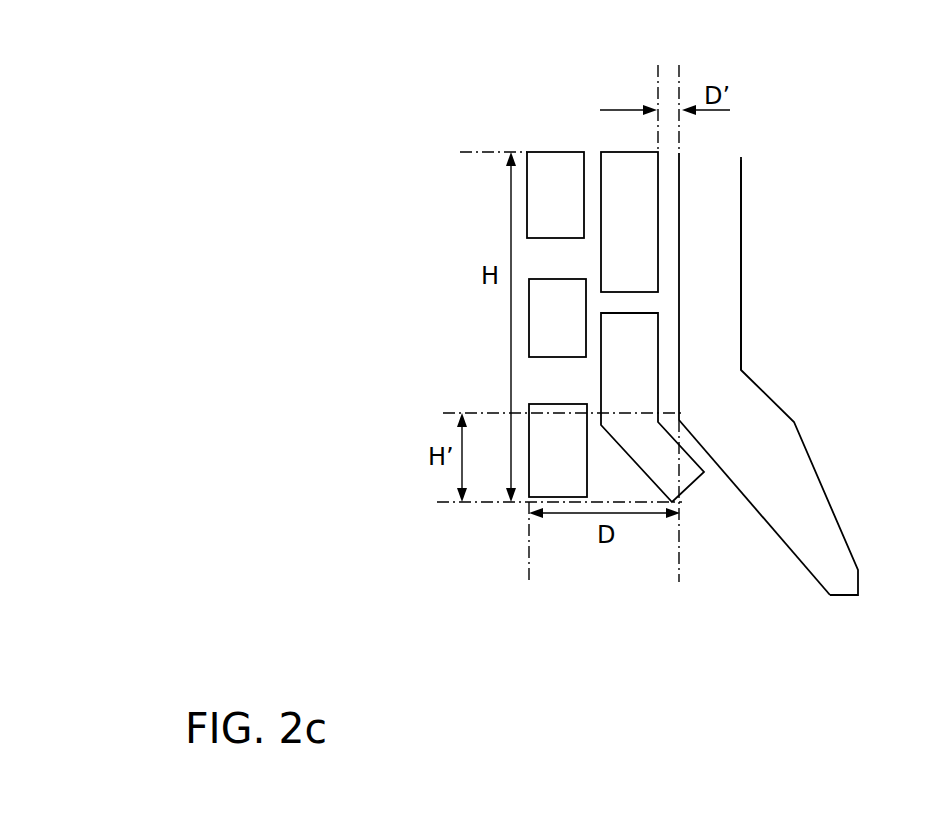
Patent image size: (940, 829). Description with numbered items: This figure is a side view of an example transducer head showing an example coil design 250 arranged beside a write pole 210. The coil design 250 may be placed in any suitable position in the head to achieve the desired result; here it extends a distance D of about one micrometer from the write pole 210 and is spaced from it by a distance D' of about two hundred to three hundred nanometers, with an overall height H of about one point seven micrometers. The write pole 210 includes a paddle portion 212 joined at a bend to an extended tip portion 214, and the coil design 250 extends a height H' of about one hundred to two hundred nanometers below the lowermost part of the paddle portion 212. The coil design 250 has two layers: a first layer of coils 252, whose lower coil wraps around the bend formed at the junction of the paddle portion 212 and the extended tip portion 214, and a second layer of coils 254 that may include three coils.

The write pole 210 is at (801, 326).
The paddle portion 212 is at (741, 232).
The extended tip portion 214 is at (815, 577).
The coil design 250 is at (563, 259).
The first layer of coils 252 is at (625, 140).
The second layer of coils 254 is at (545, 140).